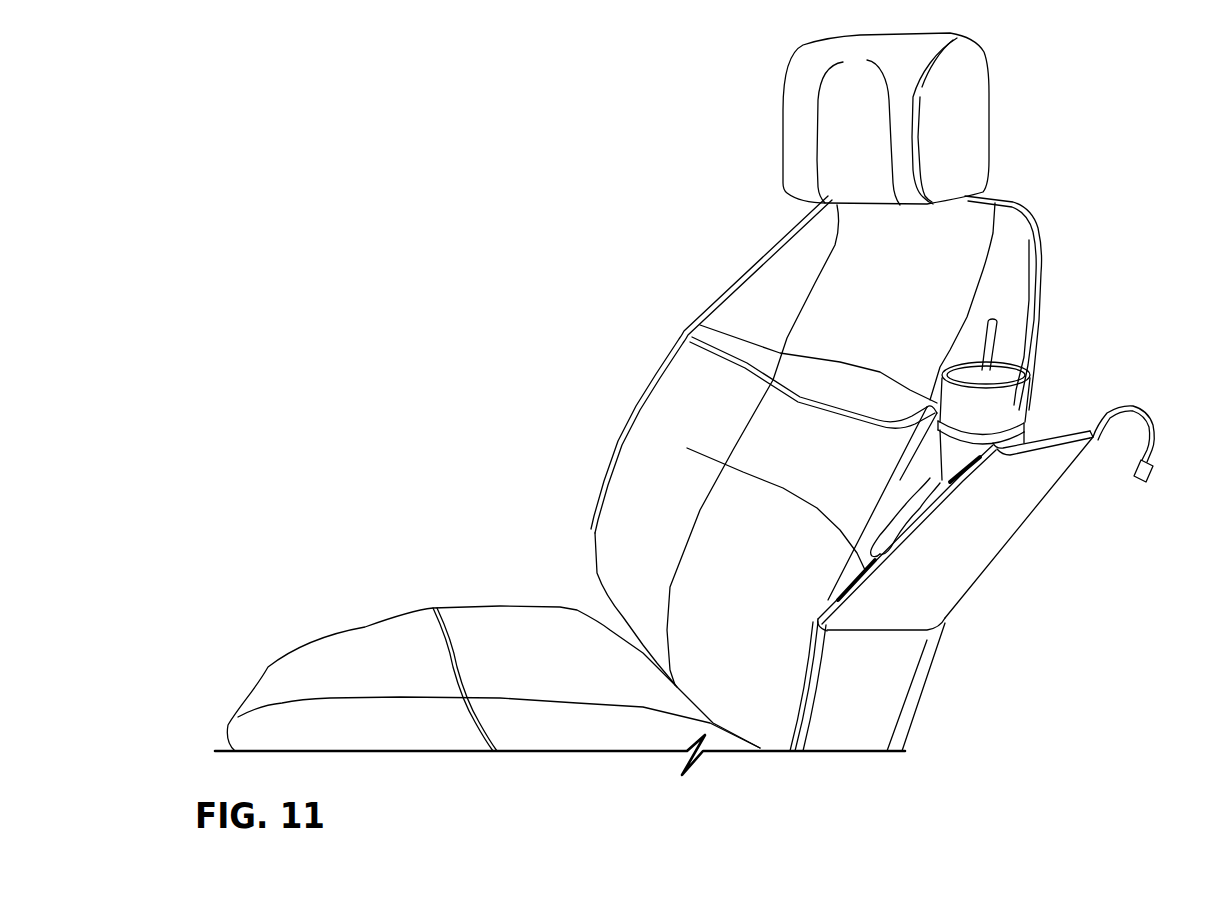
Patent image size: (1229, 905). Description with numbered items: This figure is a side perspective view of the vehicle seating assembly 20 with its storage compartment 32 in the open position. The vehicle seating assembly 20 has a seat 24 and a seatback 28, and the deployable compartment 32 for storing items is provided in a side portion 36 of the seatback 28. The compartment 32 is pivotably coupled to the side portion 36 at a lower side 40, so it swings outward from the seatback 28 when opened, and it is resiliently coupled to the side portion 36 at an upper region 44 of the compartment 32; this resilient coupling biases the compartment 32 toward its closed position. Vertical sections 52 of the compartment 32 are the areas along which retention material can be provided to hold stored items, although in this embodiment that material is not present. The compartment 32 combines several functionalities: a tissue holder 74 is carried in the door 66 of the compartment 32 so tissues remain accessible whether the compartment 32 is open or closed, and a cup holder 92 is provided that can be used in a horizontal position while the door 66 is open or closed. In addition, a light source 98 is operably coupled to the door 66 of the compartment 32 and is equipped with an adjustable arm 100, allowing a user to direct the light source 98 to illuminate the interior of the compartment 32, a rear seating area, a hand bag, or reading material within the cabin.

The vehicle seating assembly 20 is at (452, 307).
The seat 24 is at (497, 633).
The seatback 28 is at (845, 285).
The compartment 32 is at (972, 528).
The side portion 36 is at (1000, 305).
The lower side 40 is at (872, 633).
The upper region 44 is at (703, 333).
The vertical sections 52 is at (843, 578).
The door 66 is at (968, 580).
The tissue holder 74 is at (687, 448).
The cup holder 92 is at (1010, 438).
The light source 98 is at (1153, 470).
The adjustable arm 100 is at (1130, 405).